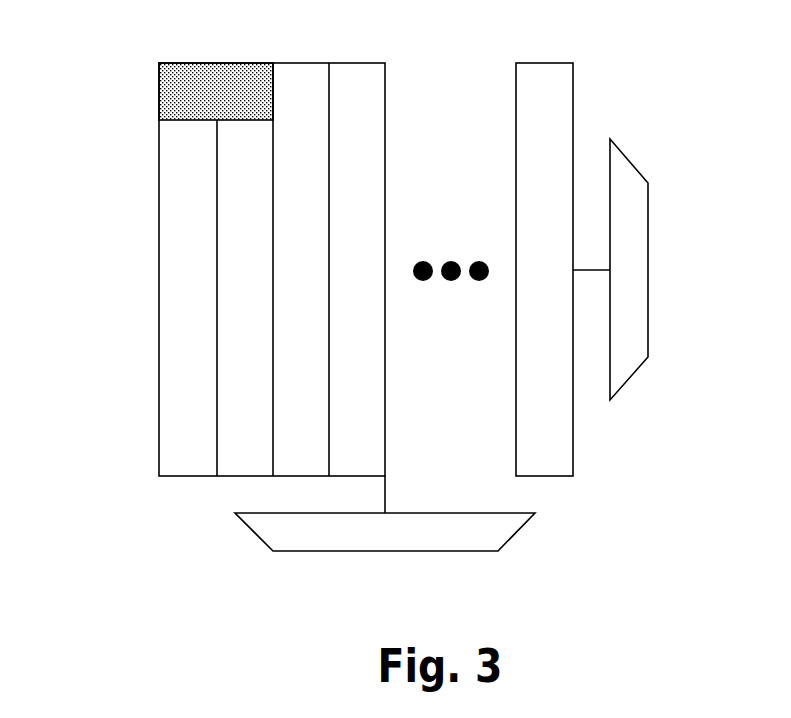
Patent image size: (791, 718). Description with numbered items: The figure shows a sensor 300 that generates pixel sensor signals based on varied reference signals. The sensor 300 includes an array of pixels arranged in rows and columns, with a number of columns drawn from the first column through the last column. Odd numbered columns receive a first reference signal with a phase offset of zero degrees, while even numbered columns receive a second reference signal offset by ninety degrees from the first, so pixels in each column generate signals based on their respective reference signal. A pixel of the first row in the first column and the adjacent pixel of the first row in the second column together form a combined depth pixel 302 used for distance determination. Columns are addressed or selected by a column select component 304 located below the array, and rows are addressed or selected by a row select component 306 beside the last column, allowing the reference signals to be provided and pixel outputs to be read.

The sensor 300 is at (150, 564).
The combined depth pixel 302 is at (113, 125).
The column select component 304 is at (308, 552).
The row select component 306 is at (648, 232).